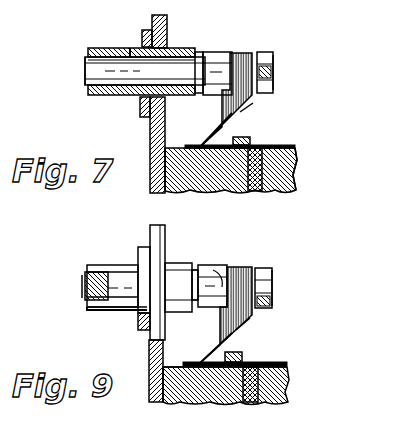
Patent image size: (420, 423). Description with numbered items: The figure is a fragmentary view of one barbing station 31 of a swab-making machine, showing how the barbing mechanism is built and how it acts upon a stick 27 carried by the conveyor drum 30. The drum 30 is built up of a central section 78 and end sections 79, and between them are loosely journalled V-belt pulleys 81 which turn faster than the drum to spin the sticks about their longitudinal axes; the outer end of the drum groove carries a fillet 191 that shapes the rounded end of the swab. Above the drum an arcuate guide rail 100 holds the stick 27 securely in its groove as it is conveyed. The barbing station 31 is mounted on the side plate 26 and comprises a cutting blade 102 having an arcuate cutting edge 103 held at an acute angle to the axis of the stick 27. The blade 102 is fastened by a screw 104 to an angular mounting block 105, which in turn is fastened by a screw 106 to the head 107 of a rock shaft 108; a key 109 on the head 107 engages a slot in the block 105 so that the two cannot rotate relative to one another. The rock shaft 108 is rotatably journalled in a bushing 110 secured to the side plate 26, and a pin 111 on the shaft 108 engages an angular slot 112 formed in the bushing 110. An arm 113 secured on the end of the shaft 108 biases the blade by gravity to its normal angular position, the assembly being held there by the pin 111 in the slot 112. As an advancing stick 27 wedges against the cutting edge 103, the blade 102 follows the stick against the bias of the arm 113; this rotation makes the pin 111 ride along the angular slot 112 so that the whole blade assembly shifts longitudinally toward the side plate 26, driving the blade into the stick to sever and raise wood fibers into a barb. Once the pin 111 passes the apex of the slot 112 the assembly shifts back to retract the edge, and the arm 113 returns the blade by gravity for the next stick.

In FIG. 7, the side plate 26 is at (167, 23).
In FIG. 9, the side plate 26 is at (157, 238).
In FIG. 7, the stick 27 is at (291, 148).
In FIG. 9, the stick 27 is at (281, 362).
In FIG. 7, the conveyor drum 30 is at (300, 168).
In FIG. 9, the conveyor drum 30 is at (274, 390).
In FIG. 7, the barbing station 31 is at (276, 61).
In FIG. 9, the barbing station 31 is at (263, 270).
In FIG. 7, the central section 78 is at (296, 186).
In FIG. 7, the end section 79 is at (213, 176).
In FIG. 9, the end section 79 is at (222, 392).
In FIG. 7, the V-belt pulley 81 is at (254, 188).
In FIG. 9, the V-belt pulley 81 is at (250, 394).
In FIG. 7, the arcuate guide rail 100 is at (242, 138).
In FIG. 9, the arcuate guide rail 100 is at (244, 354).
In FIG. 7, the cutting blade 102 is at (215, 133).
In FIG. 9, the cutting blade 102 is at (210, 352).
In FIG. 7, the arcuate cutting edge 103 is at (205, 144).
In FIG. 9, the arcuate cutting edge 103 is at (235, 364).
In FIG. 7, the screw 104 is at (243, 112).
In FIG. 9, the screw 104 is at (240, 329).
In FIG. 7, the angular mounting block 105 is at (259, 56).
In FIG. 9, the angular mounting block 105 is at (270, 282).
In FIG. 7, the screw 106 is at (268, 77).
In FIG. 9, the screw 106 is at (269, 303).
In FIG. 7, the head 107 is at (213, 55).
In FIG. 9, the head 107 is at (215, 307).
In FIG. 7, the rock shaft 108 is at (100, 68).
In FIG. 9, the rock shaft 108 is at (86, 287).
In FIG. 7, the key 109 is at (225, 72).
In FIG. 9, the key 109 is at (250, 254).
In FIG. 7, the bushing 110 is at (118, 48).
In FIG. 9, the bushing 110 is at (113, 270).
In FIG. 7, the pin 111 is at (131, 48).
In FIG. 7, the angular slot 112 is at (142, 56).
In FIG. 9, the angular slot 112 is at (133, 275).
In FIG. 7, the arm 113 is at (94, 94).
In FIG. 9, the arm 113 is at (97, 307).
In FIG. 7, the fillet 191 is at (152, 135).
In FIG. 9, the fillet 191 is at (151, 348).